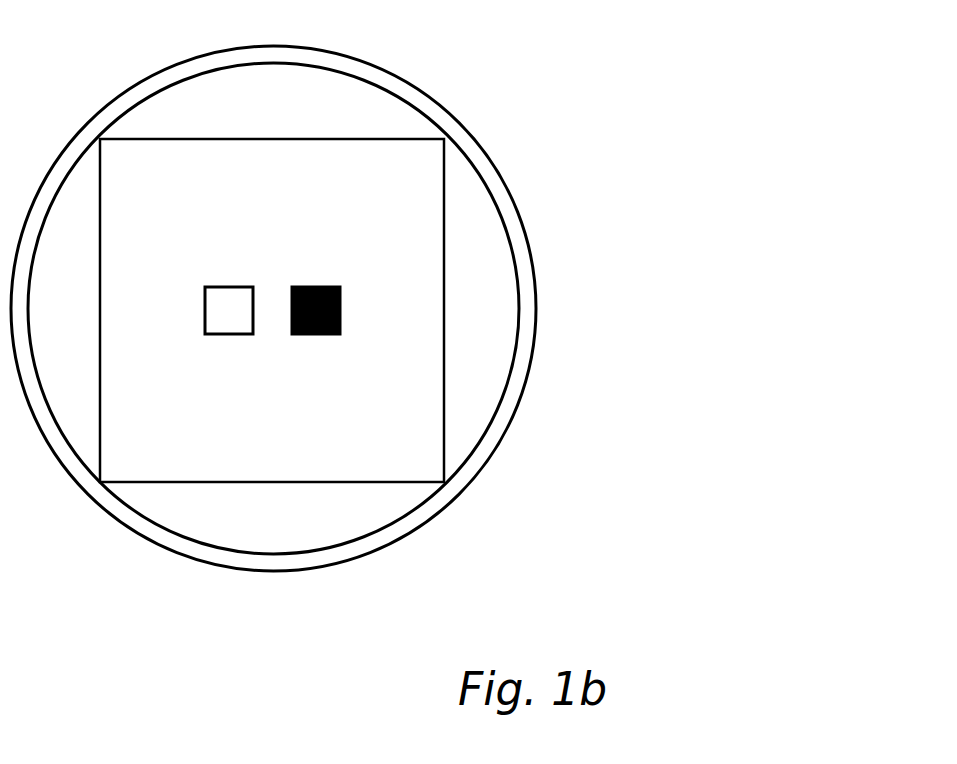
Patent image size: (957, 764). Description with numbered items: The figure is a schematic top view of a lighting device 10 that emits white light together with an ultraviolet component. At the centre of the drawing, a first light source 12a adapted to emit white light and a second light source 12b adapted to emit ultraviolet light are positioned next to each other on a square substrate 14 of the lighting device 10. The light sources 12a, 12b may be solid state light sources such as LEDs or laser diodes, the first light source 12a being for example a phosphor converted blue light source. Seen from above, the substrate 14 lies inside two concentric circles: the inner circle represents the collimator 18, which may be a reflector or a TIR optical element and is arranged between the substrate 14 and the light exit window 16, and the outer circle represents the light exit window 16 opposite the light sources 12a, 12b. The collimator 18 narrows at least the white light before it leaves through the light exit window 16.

The lighting device 10 is at (566, 93).
The first light source 12a is at (313, 287).
The second light source 12b is at (233, 287).
The substrate 14 is at (413, 139).
The light exit window 16 is at (452, 504).
The collimator 18 is at (507, 228).